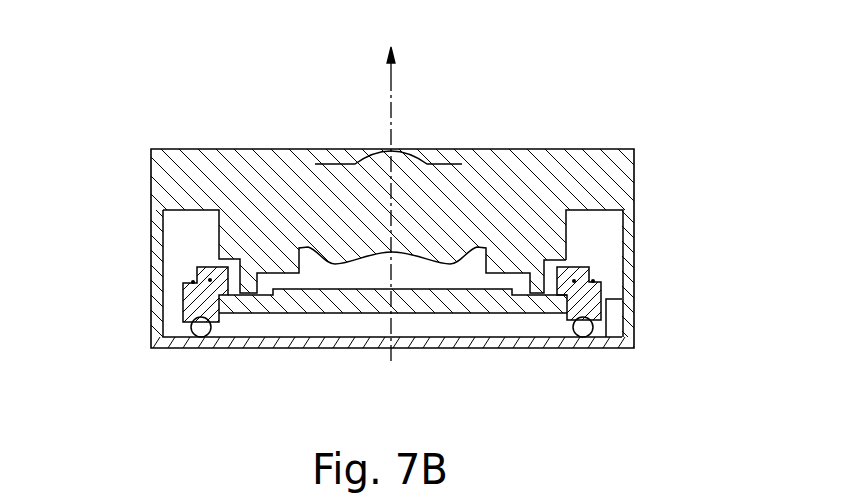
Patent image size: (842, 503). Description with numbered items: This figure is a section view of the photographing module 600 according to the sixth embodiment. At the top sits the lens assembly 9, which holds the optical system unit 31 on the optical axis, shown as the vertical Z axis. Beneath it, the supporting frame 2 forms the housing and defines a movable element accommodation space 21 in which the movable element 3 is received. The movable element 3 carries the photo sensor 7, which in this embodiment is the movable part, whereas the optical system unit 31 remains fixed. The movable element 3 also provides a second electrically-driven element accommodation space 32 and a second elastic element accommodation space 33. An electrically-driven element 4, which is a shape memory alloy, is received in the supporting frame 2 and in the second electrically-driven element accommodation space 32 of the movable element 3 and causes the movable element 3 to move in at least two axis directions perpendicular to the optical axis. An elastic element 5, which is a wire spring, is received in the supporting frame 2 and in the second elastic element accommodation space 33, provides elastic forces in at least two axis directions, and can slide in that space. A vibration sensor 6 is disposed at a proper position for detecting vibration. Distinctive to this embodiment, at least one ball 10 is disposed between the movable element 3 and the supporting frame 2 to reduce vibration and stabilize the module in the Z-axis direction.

The photographing module 600 is at (692, 61).
The lens assembly 9 is at (528, 167).
The optical system unit 31 is at (403, 153).
The supporting frame 2 is at (630, 302).
The movable element accommodation space 21 is at (608, 268).
The movable element 3 is at (568, 267).
The electrically-driven element 4 is at (173, 268).
The second electrically-driven element accommodation space 32 is at (210, 280).
The elastic element 5 is at (173, 268).
The second elastic element accommodation space 33 is at (173, 268).
The vibration sensor 6 is at (612, 327).
The photo sensor 7 is at (352, 293).
The ball 10 is at (202, 333).